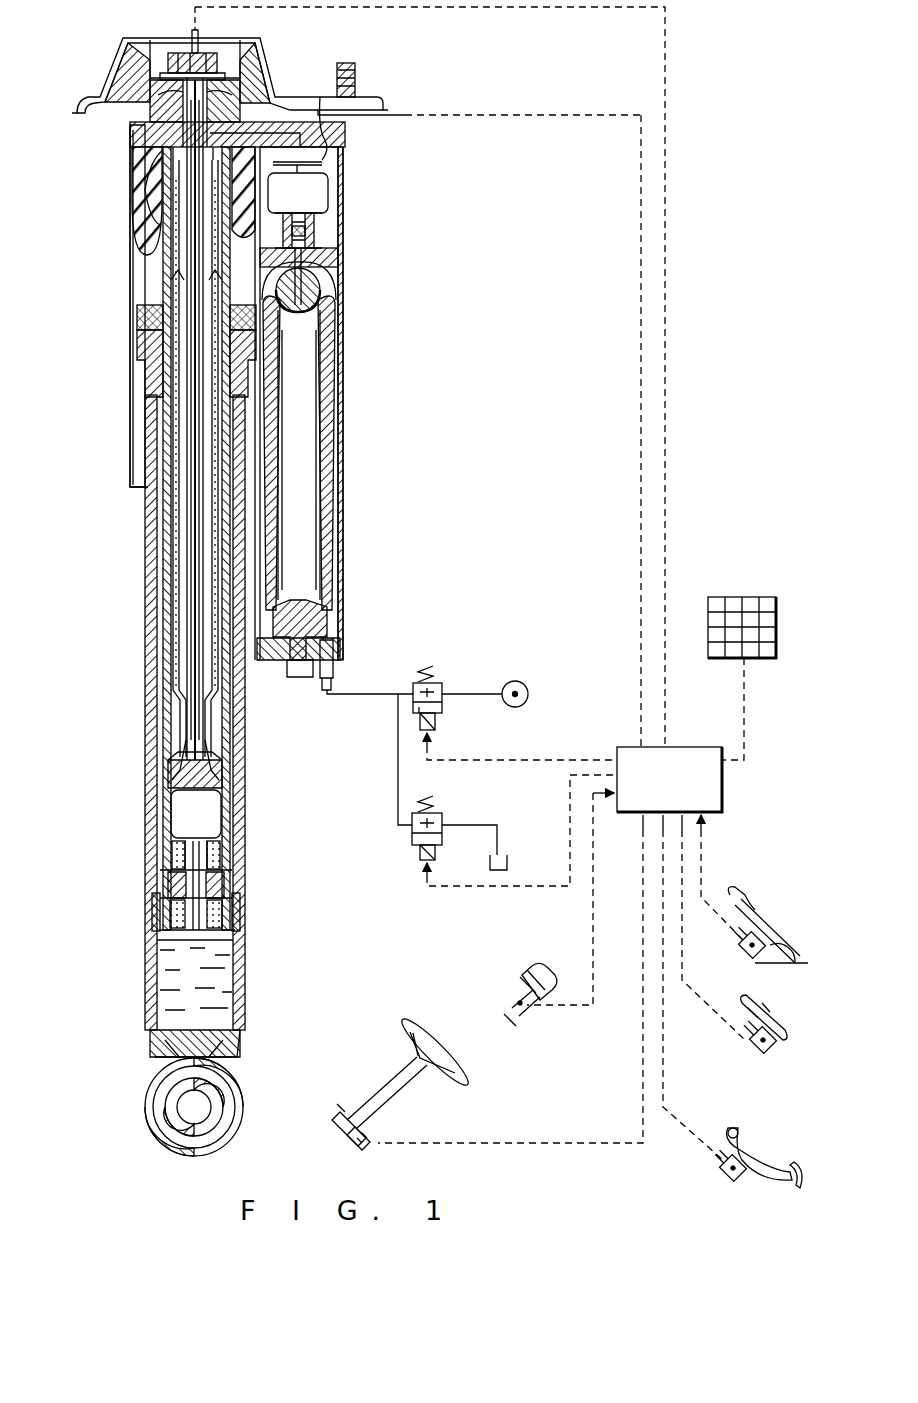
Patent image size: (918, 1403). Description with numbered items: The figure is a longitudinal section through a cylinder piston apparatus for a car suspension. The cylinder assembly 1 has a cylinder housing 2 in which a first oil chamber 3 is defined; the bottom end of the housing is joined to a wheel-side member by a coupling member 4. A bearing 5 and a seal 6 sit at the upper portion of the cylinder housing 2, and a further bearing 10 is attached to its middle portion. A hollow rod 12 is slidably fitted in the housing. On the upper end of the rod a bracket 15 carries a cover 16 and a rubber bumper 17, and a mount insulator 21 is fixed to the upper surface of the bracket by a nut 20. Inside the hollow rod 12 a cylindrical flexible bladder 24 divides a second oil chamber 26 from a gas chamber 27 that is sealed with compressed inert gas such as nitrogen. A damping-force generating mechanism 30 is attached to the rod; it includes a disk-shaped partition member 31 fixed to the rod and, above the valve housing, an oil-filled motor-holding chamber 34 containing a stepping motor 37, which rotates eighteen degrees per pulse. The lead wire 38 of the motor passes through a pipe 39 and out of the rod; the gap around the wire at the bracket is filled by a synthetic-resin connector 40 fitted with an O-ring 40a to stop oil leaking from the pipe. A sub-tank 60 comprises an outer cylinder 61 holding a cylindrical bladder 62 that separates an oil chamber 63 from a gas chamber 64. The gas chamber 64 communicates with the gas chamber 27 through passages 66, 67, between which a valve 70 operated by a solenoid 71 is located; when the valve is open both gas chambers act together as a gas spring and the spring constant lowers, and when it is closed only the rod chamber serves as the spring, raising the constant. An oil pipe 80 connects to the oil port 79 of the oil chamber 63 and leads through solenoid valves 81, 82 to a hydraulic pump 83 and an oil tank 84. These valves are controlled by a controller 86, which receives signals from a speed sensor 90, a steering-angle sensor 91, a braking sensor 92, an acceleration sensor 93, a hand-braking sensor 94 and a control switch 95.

The cylinder assembly 1 is at (108, 222).
The cylinder housing 2 is at (147, 622).
The first oil chamber 3 is at (156, 972).
The coupling member 4 is at (246, 1088).
The bearing 5 is at (146, 357).
The seal 6 is at (143, 324).
The bearing 10 is at (156, 726).
The hollow rod 12 is at (164, 272).
The bracket 15 is at (140, 133).
The cover 16 is at (136, 431).
The rubber bumper 17 is at (146, 181).
The nut 20 is at (170, 58).
The mount insulator 21 is at (279, 58).
The cylindrical flexible bladder 24 is at (173, 286).
The second oil chamber 26 is at (165, 513).
The gas chamber 27 is at (180, 222).
The damping-force generating mechanism 30 is at (222, 856).
The partition member 31 is at (226, 888).
The motor-holding chamber 34 is at (226, 828).
The stepping motor 37 is at (174, 810).
The lead wire 38 is at (192, 34).
The pipe 39 is at (186, 560).
The connector 40 is at (152, 112).
The O-ring 40a is at (127, 84).
The sub-tank 60 is at (376, 374).
The outer cylinder 61 is at (342, 418).
The cylindrical bladder 62 is at (332, 467).
The oil chamber 63 is at (336, 507).
The gas chamber 64 is at (312, 556).
The passage 66 is at (302, 294).
The passage 67 is at (290, 133).
The valve 70 is at (318, 229).
The solenoid 71 is at (322, 200).
The oil port 79 is at (340, 676).
The oil pipe 80 is at (350, 697).
The solenoid valve 81 is at (437, 683).
The solenoid valve 82 is at (440, 818).
The hydraulic pump 83 is at (525, 683).
The oil tank 84 is at (505, 856).
The controller 86 is at (700, 747).
The speed sensor 90 is at (526, 1008).
The steering-angle sensor 91 is at (355, 1135).
The braking sensor 92 is at (727, 1170).
The acceleration sensor 93 is at (755, 1049).
The hand-braking sensor 94 is at (742, 944).
The control switch 95 is at (745, 597).